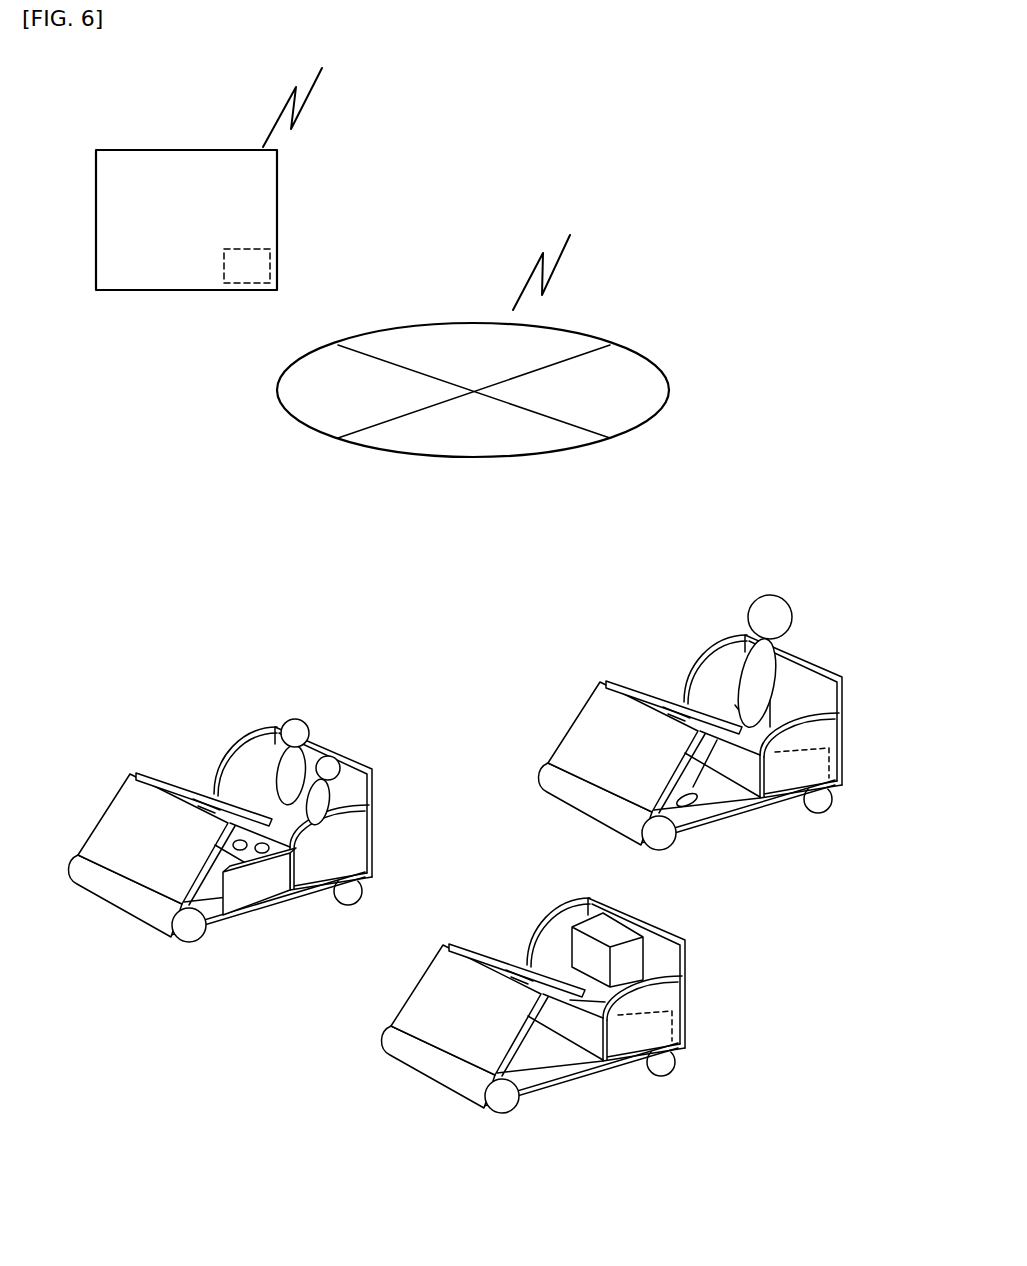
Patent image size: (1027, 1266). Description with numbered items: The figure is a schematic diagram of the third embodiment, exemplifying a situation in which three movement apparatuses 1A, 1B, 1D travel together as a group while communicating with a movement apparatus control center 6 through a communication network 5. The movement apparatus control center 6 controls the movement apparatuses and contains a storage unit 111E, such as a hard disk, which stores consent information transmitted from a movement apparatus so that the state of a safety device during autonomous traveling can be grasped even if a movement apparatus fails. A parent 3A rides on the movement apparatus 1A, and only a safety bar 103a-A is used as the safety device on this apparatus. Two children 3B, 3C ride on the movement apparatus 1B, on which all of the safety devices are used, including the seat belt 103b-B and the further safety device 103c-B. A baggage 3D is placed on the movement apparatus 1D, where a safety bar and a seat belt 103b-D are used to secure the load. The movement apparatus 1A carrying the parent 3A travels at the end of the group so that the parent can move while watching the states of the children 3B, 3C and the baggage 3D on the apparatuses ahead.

The movement apparatus control center 6 is at (156, 149).
The storage unit 111E is at (250, 250).
The communication network 5 is at (633, 351).
The movement apparatus 1A is at (700, 683).
The safety bar 103a-A is at (662, 678).
The parent 3A is at (753, 607).
The movement apparatus 1B is at (242, 831).
The seat belt 103b-B is at (247, 767).
The child 3B is at (305, 717).
The child 3C is at (348, 765).
The safety device 103c-B is at (255, 897).
The movement apparatus 1D is at (583, 994).
The seat belt 103b-D is at (545, 965).
The baggage 3D is at (670, 932).